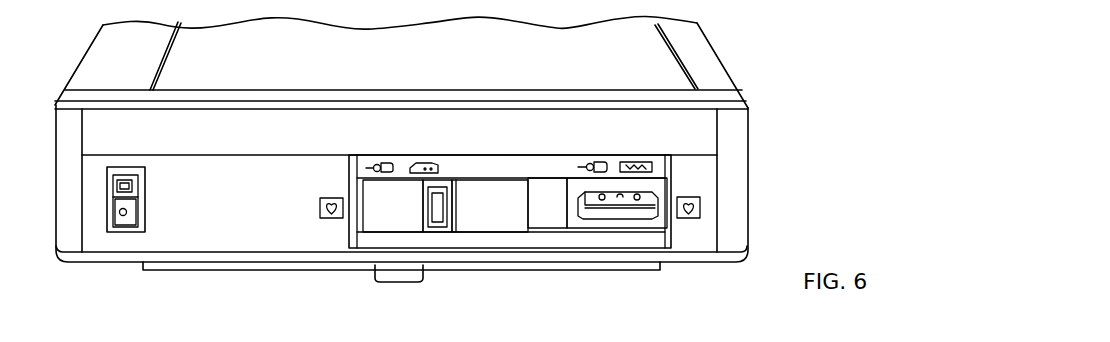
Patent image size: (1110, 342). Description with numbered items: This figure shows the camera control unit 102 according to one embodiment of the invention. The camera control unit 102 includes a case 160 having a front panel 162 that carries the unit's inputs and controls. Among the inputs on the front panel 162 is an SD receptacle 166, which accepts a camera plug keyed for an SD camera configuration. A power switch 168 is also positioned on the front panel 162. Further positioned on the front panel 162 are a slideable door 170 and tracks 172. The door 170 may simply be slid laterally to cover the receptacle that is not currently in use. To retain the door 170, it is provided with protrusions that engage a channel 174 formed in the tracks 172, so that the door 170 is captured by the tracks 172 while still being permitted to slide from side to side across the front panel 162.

The camera control unit 102 is at (780, 89).
The case 160 is at (95, 61).
The front panel 162 is at (729, 182).
The SD receptacle 166 is at (613, 228).
The power switch 168 is at (122, 232).
The slideable door 170 is at (480, 218).
The tracks 172 is at (483, 166).
The channel 174 is at (547, 228).